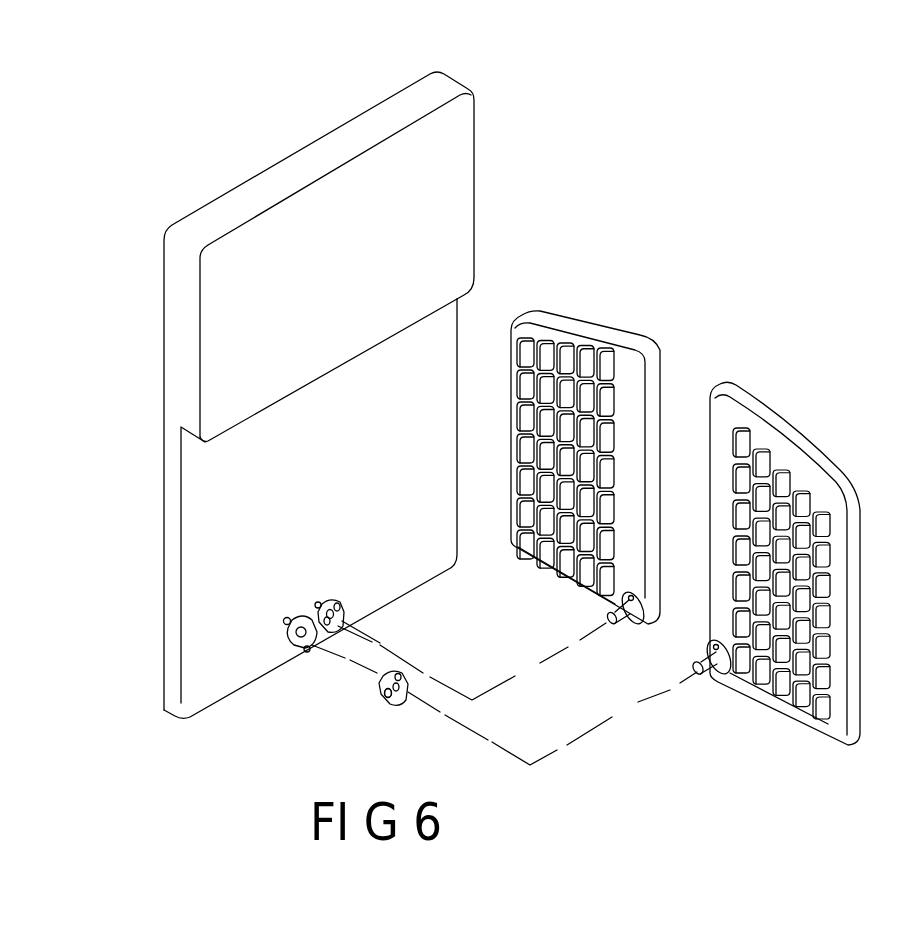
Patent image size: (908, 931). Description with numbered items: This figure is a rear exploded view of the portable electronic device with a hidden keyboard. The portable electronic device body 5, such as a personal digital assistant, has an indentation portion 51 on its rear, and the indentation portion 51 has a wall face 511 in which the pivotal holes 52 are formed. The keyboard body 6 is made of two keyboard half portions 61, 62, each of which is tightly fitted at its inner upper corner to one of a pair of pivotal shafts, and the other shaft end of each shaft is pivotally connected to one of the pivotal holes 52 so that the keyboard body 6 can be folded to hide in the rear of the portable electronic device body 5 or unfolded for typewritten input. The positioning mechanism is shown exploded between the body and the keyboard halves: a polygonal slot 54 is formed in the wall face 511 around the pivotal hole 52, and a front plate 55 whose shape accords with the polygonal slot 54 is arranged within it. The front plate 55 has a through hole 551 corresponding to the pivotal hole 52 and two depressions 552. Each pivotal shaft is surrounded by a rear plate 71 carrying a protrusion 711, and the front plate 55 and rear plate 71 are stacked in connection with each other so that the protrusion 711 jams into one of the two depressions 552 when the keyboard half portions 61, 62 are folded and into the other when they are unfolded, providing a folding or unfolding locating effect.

The portable electronic device body 5 is at (222, 143).
The indentation portion 51 is at (203, 480).
The wall face 511 is at (225, 561).
The pivotal hole 52 is at (290, 638).
The polygonal slot 54 is at (313, 646).
The front plate 55 is at (377, 645).
The through hole 551 is at (393, 694).
The depression 552 is at (378, 673).
The keyboard body 6 is at (733, 302).
The keyboard half portion 61 is at (586, 318).
The keyboard half portion 62 is at (786, 437).
The rear plate 71 is at (723, 677).
The protrusion 711 is at (702, 649).